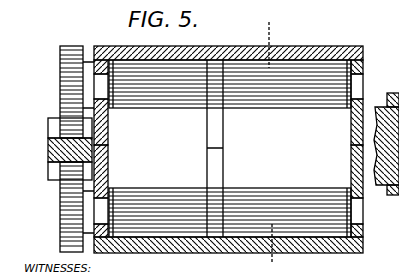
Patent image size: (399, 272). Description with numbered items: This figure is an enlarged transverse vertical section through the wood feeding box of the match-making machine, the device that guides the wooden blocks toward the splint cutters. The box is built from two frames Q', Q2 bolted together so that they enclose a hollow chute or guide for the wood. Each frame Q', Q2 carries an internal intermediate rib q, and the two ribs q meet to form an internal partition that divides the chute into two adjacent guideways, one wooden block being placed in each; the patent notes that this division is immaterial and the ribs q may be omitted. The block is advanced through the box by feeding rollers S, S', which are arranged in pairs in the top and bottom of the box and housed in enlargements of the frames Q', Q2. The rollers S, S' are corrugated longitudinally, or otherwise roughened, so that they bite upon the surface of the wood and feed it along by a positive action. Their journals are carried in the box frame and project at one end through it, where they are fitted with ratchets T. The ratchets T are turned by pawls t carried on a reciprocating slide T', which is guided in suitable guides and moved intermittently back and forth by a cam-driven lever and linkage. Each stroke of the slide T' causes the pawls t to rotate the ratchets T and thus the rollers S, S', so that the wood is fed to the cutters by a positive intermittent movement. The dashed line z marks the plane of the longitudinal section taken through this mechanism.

The ratchet T is at (60, 149).
The pawl t is at (63, 126).
The reciprocating slide T' is at (54, 152).
The frame of the wood feeding box Q' is at (228, 81).
The frame of the wood feeding box Q2 is at (333, 243).
The feeding roller S is at (230, 100).
The feeding roller S' is at (230, 200).
The internal intermediate rib q is at (223, 128).
The section line z z is at (262, 141).